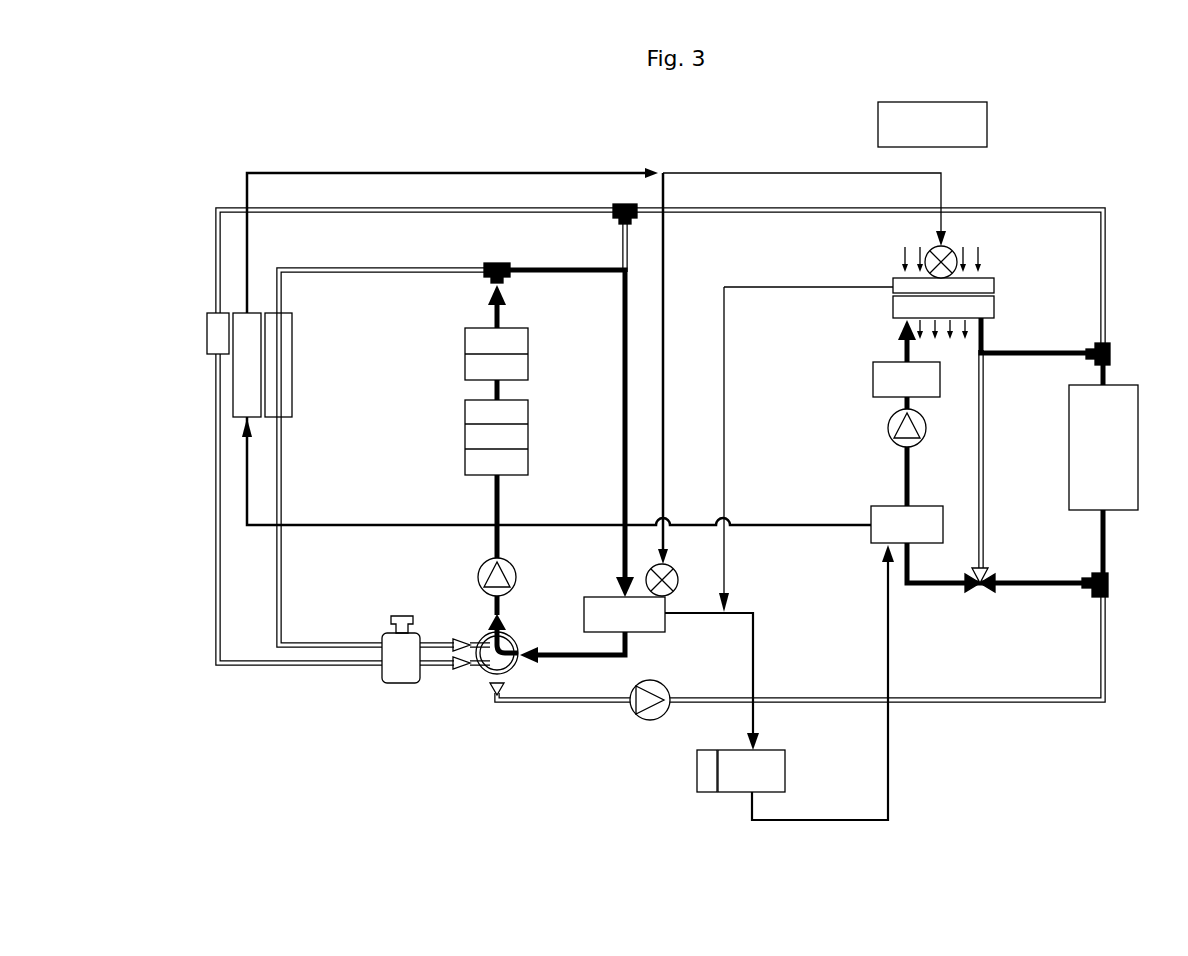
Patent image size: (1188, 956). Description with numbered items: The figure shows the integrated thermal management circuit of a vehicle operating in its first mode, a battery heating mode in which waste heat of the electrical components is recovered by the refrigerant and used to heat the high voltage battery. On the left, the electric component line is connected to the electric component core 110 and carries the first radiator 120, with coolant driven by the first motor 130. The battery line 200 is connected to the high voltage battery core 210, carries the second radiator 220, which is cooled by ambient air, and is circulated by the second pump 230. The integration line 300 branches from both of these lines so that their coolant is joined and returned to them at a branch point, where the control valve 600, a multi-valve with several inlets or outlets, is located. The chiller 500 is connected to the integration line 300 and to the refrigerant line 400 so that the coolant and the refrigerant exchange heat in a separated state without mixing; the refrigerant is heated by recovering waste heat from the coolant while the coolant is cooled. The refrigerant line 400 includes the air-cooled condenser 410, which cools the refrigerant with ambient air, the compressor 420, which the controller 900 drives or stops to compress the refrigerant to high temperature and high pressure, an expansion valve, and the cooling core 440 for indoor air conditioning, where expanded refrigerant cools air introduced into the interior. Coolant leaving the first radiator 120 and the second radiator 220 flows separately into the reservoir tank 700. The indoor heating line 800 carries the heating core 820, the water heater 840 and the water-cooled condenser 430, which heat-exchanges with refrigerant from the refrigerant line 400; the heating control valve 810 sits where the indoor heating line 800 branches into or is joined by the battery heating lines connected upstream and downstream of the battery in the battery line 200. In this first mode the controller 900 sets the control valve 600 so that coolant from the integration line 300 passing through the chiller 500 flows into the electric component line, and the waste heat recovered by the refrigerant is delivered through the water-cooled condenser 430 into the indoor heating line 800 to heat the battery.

The electric component core 110 is at (464, 405).
The first radiator 120 is at (293, 412).
The first motor 130 is at (480, 570).
The battery line 200 is at (1079, 209).
The high voltage battery core 210 is at (1130, 511).
The second radiator 220 is at (209, 312).
The second pump 230 is at (636, 716).
The integration line 300 is at (621, 388).
The refrigerant line 400 is at (428, 171).
The air-cooled condenser 410 is at (240, 385).
The compressor 420 is at (786, 771).
The water-cooled condenser 430 is at (880, 505).
The cooling core 440 is at (995, 286).
The chiller 500 is at (624, 614).
The control valve 600 is at (482, 678).
The reservoir tank 700 is at (397, 684).
The indoor heating line 800 is at (932, 589).
The heating control valve 810 is at (980, 594).
The heating core 820 is at (995, 308).
The water heater 840 is at (872, 380).
The controller 900 is at (988, 120).